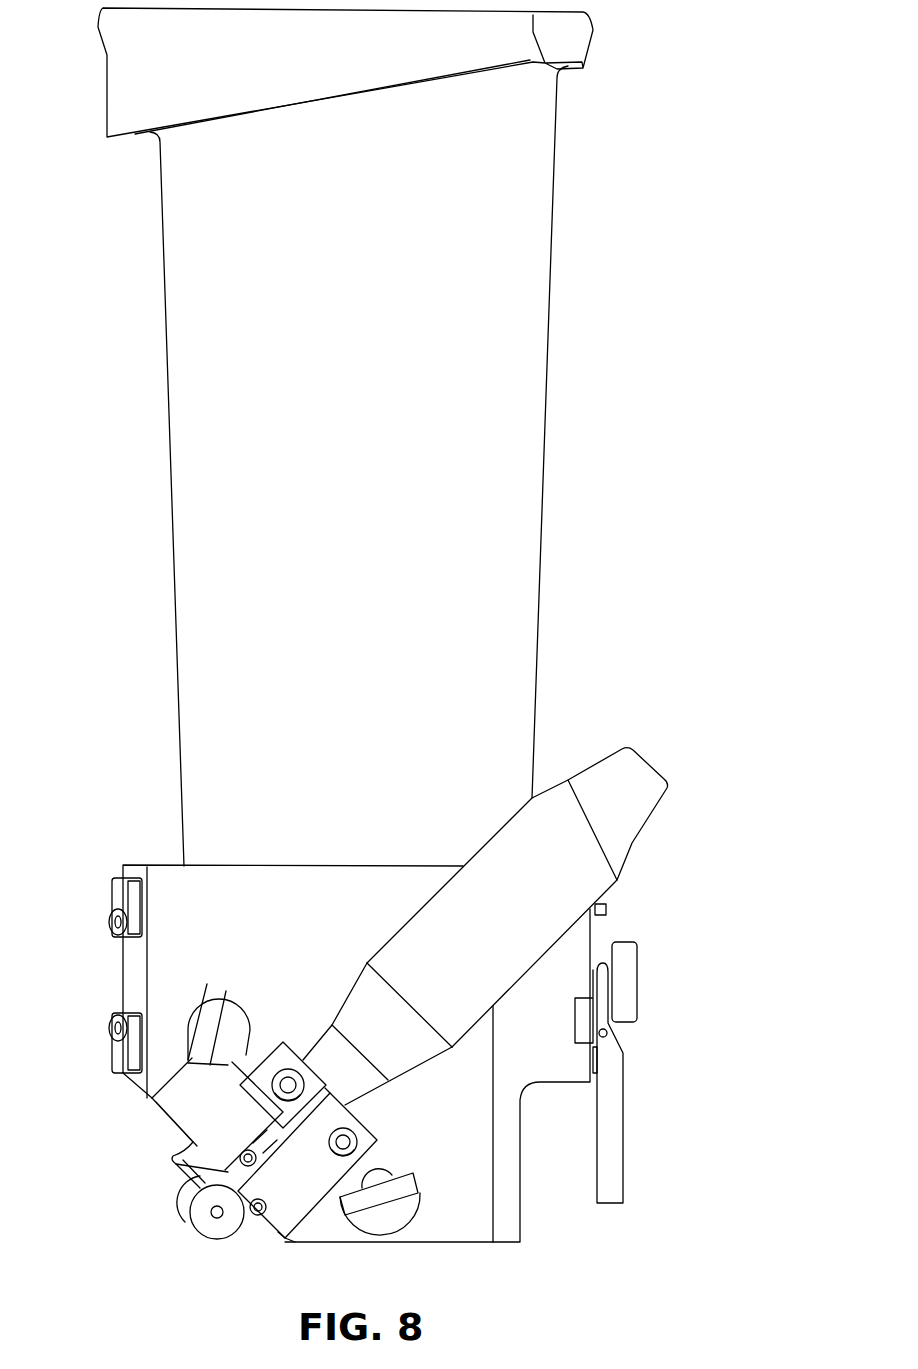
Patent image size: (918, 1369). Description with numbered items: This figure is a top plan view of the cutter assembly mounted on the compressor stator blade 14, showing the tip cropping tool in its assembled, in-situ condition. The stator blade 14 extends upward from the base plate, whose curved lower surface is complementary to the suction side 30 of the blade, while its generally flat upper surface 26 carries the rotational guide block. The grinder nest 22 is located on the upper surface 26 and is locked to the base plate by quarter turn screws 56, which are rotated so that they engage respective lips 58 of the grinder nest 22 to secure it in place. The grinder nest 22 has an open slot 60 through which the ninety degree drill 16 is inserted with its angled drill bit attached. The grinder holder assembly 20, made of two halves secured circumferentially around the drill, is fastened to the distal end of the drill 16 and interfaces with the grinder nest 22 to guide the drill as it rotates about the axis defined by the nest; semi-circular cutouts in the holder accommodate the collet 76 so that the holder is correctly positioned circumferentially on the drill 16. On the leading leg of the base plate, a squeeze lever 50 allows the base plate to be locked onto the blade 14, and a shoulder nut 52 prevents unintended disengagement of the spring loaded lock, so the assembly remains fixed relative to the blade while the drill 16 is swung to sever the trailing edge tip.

The stator blade 14 is at (515, 354).
The suction side 30 is at (344, 543).
The 90° drill 16 is at (518, 932).
The upper surface 26 is at (453, 1105).
The grinder nest 22 is at (283, 1014).
The grinder holder assembly 20 is at (303, 1217).
The lips 58 is at (172, 1048).
The quarter turn screws 56 is at (235, 1017).
The open slot 60 is at (200, 1163).
The collet 76 is at (223, 1227).
The squeeze lever 50 is at (612, 1163).
The shoulder nut 52 is at (627, 970).